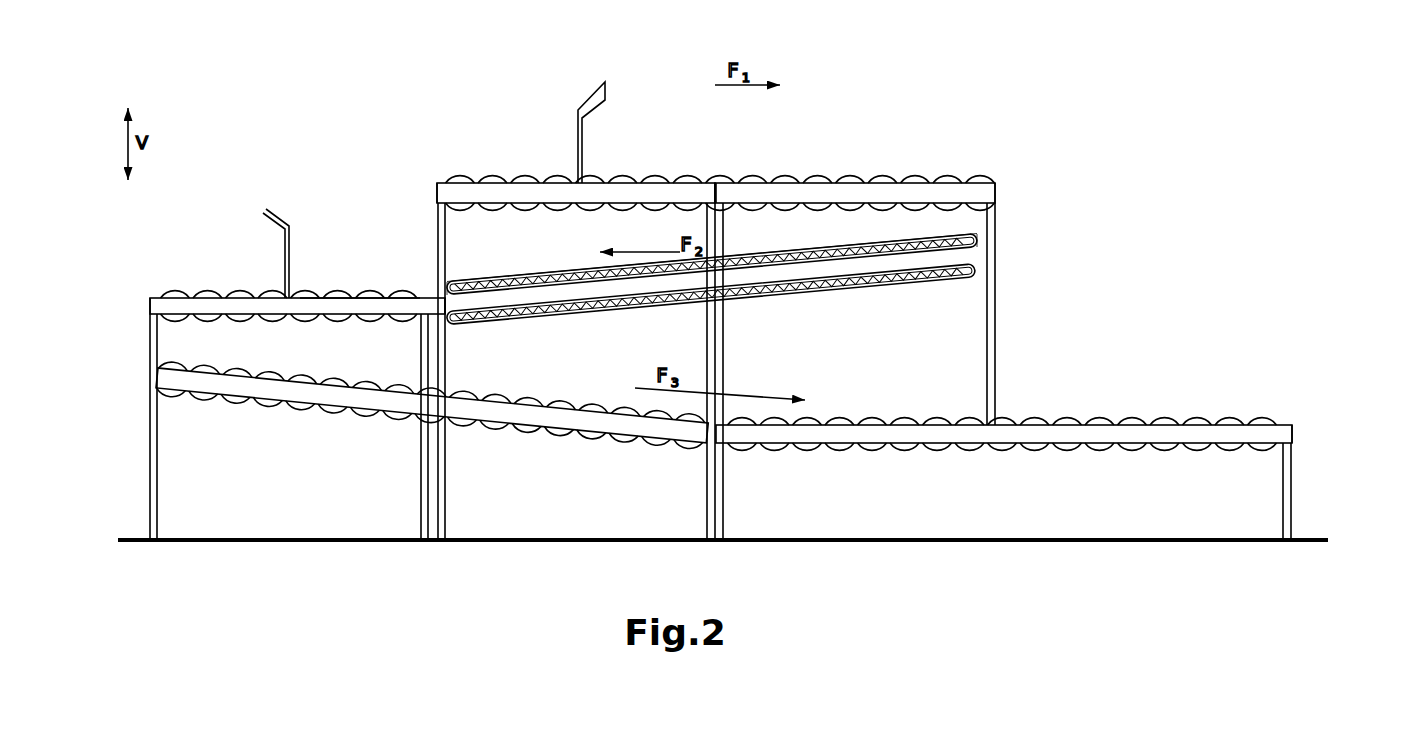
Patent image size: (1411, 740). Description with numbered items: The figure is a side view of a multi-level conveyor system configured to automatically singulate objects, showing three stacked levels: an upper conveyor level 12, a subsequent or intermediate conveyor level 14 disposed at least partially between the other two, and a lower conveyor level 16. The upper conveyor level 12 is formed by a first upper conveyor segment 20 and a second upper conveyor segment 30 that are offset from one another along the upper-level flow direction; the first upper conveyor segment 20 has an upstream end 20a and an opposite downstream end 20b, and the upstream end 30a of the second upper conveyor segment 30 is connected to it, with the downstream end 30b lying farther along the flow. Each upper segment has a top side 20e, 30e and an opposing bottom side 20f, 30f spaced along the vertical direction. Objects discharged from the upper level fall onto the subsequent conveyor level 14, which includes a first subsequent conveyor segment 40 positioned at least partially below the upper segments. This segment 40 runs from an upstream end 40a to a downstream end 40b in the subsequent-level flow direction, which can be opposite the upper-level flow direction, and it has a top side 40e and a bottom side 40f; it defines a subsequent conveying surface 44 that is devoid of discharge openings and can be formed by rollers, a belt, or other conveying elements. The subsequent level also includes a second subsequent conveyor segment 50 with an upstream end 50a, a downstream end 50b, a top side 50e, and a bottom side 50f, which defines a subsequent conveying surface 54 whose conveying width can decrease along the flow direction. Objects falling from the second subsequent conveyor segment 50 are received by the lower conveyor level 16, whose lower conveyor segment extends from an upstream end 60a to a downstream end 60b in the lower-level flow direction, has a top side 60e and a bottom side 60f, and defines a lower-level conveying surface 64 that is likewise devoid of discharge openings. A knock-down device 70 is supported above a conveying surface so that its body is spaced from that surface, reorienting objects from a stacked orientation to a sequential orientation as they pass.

The upper conveyor level 12 is at (1000, 196).
The subsequent conveyor level 14 is at (148, 303).
The lower conveyor level 16 is at (1296, 436).
The first upper conveyor segment 20 is at (546, 176).
The upstream end 20a is at (440, 192).
The downstream end 20b is at (714, 182).
The top side 20e is at (488, 178).
The bottom side 20f is at (478, 215).
The second upper conveyor segment 30 is at (896, 162).
The upstream end 30a is at (728, 182).
The downstream end 30b is at (995, 183).
The top side 30e is at (826, 172).
The bottom side 30f is at (820, 210).
The first subsequent conveyor segment 40 is at (862, 290).
The upstream end 40a is at (975, 250).
The downstream end 40b is at (458, 290).
The top side 40e is at (541, 273).
The bottom side 40f is at (598, 316).
The subsequent conveying surface 44 is at (822, 242).
The second subsequent conveyor segment 50 is at (258, 218).
The upstream end 50a is at (438, 300).
The downstream end 50b is at (160, 298).
The top side 50e is at (246, 285).
The bottom side 50f is at (358, 322).
The subsequent conveying surface 54 is at (352, 286).
The upstream end 60a is at (153, 385).
The downstream end 60b is at (1293, 425).
The top side 60e is at (1082, 414).
The bottom side 60f is at (1125, 452).
The lower-level conveying surface 64 is at (892, 412).
The knock-down device 70 is at (281, 212).